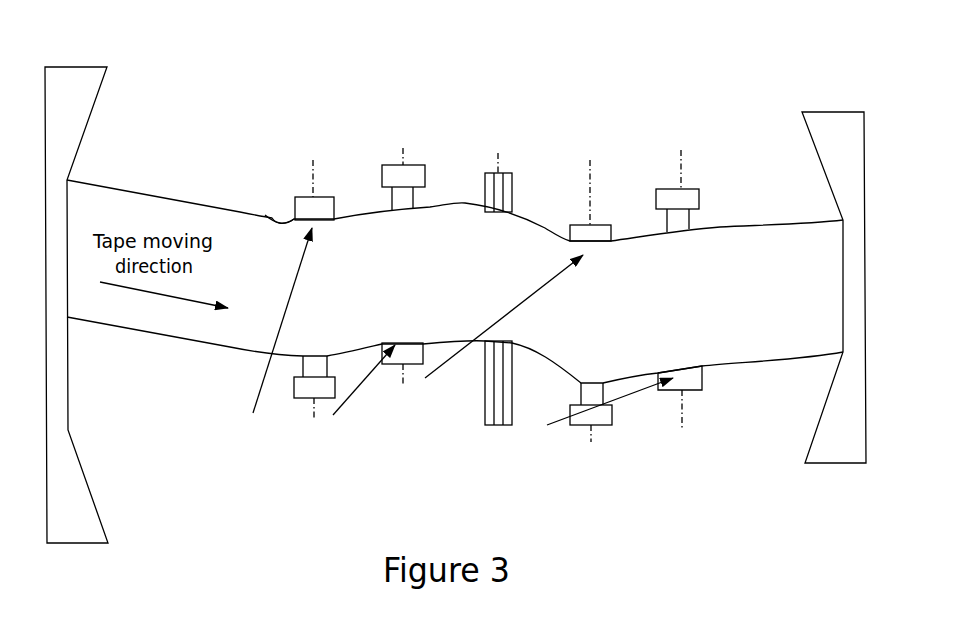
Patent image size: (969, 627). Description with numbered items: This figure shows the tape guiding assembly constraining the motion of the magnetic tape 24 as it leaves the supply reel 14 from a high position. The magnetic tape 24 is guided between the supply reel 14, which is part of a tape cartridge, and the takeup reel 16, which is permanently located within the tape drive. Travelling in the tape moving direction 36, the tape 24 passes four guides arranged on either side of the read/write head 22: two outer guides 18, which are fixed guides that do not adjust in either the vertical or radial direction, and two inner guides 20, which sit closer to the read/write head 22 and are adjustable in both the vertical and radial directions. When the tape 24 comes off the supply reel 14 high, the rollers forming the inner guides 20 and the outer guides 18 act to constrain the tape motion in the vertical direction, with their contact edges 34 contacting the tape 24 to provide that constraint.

The supply reel 14 is at (46, 88).
The takeup reel 16 is at (865, 142).
The outer guides 18 is at (328, 190).
The inner guides 20 is at (413, 173).
The read/write head 22 is at (503, 171).
The magnetic tape 24 is at (220, 327).
The contact edges 34 is at (275, 219).
The tape moving direction 36 is at (138, 292).